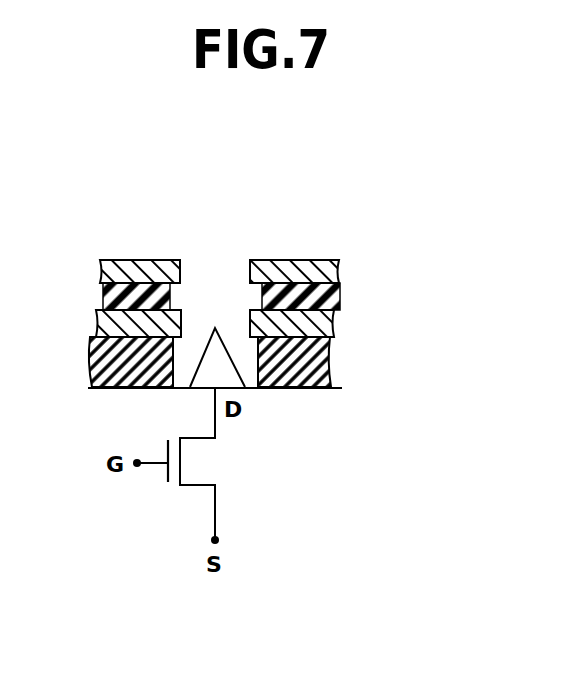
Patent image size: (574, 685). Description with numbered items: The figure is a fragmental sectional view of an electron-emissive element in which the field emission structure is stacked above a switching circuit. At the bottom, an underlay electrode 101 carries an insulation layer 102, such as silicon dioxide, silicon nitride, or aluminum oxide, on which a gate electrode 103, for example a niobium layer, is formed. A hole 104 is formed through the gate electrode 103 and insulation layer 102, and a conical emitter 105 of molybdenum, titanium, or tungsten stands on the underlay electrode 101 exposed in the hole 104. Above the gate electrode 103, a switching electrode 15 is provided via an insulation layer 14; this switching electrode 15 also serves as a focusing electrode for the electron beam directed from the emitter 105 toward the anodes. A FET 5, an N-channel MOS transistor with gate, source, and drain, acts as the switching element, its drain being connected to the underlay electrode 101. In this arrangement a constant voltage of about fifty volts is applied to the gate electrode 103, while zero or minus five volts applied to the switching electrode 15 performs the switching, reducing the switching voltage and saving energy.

The FET 5 is at (173, 490).
The insulation layer 14 is at (305, 295).
The switching electrode 15 is at (328, 273).
The underlay electrode 101 is at (295, 388).
The insulation layer 102 is at (307, 363).
The gate electrode 103 is at (303, 327).
The hole 104 is at (195, 328).
The conical emitter 105 is at (220, 357).